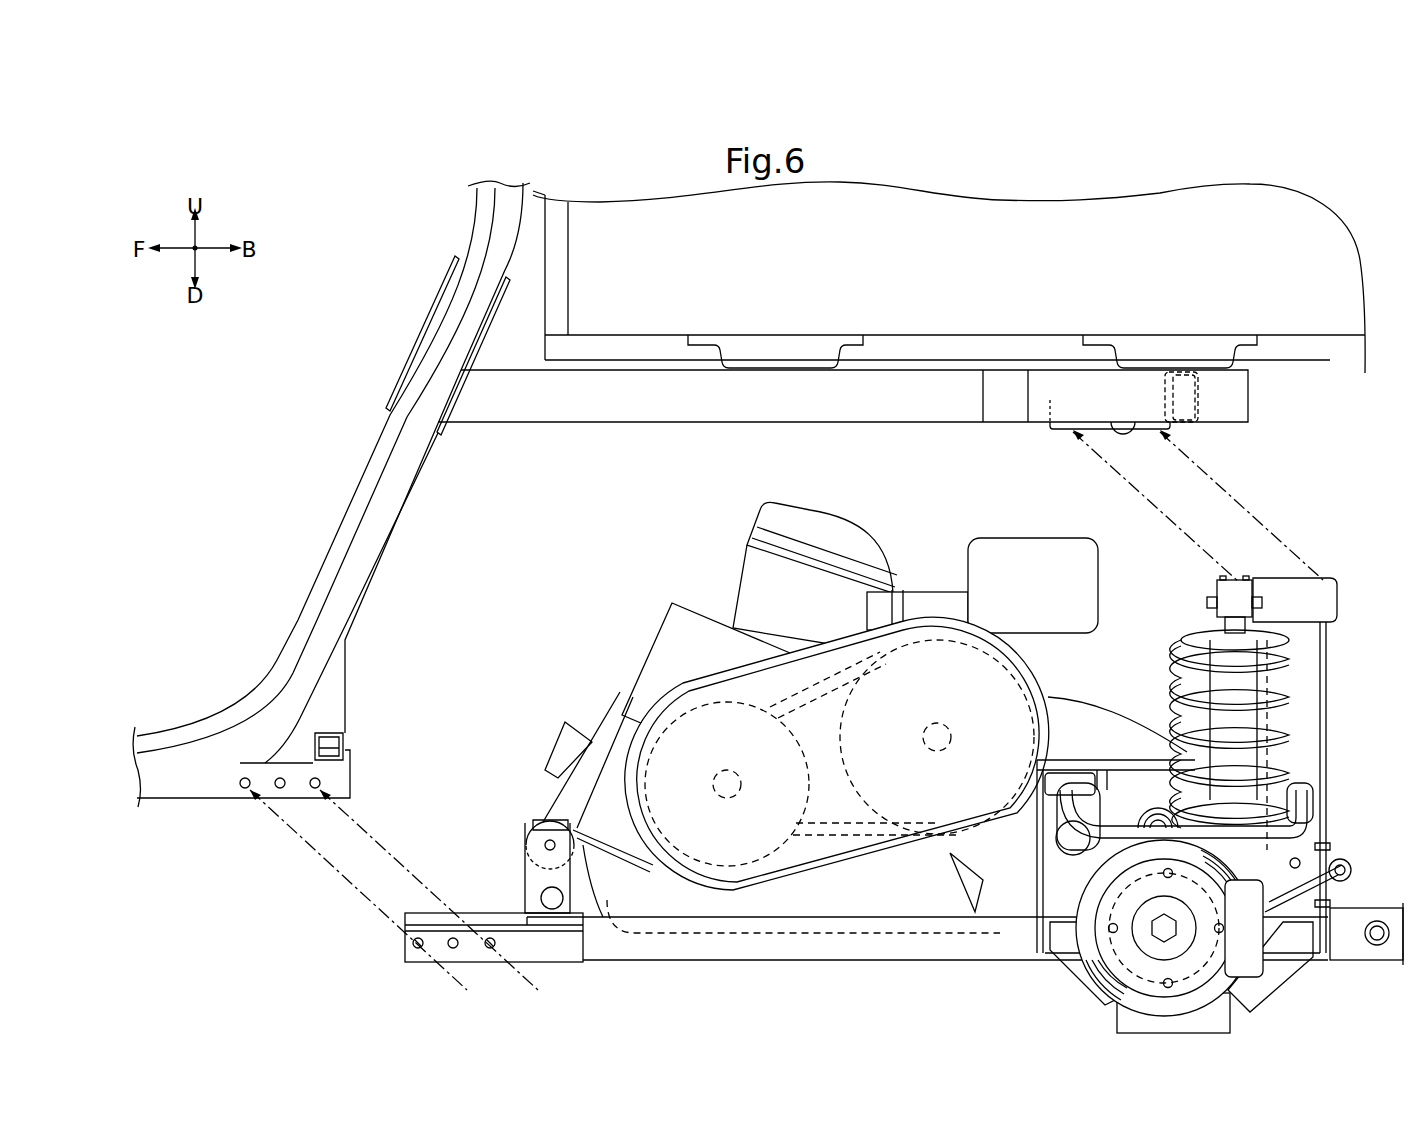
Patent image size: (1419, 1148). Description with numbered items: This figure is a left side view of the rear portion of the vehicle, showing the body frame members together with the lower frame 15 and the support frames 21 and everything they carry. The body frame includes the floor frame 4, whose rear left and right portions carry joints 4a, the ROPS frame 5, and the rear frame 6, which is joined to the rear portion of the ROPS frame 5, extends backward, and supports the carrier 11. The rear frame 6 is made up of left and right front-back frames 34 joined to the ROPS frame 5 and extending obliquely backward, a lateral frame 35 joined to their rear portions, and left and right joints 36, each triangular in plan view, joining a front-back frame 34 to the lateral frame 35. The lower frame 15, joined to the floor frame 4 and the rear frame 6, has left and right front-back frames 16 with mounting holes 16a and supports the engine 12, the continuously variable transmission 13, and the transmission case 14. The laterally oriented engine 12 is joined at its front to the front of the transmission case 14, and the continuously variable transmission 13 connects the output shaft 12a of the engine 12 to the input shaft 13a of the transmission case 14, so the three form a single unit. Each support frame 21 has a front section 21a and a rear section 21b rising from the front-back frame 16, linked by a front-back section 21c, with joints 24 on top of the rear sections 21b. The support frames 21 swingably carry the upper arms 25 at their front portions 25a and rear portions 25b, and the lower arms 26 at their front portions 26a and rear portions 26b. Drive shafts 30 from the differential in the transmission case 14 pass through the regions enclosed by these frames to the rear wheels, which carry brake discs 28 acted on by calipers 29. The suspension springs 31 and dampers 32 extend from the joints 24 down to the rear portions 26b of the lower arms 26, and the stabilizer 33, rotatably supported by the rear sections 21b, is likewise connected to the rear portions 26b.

The floor frame 4 is at (243, 720).
The joints 4a is at (265, 778).
The ROPS frame 5 is at (359, 480).
The rear frame 6 is at (843, 411).
The carrier 11 is at (1330, 362).
The engine 12 is at (665, 640).
The output shaft 12a is at (712, 782).
The continuously variable transmission 13 is at (795, 775).
The input shaft 13a is at (948, 730).
The transmission case 14 is at (1075, 718).
The lower frame 15 is at (866, 982).
The front-back frames 16 is at (606, 978).
The mounting holes 16a is at (474, 955).
The support frames 21 is at (1147, 768).
The front section 21a is at (1037, 873).
The rear section 21b is at (1328, 662).
The front-back section 21c is at (1150, 768).
The joints 24 is at (1287, 585).
The upper arms 25 is at (1172, 789).
The front portions 25a is at (1042, 780).
The rear portions 25b is at (1303, 780).
The lower arms 26 is at (1146, 980).
The front portions 26a is at (1073, 957).
The rear portions 26b is at (1280, 970).
The brake discs 28 is at (1083, 973).
The calipers 29 is at (1247, 955).
The drive shafts 30 is at (1120, 1033).
The suspension springs 31 is at (1190, 660).
The dampers 32 is at (1245, 706).
The stabilizer 33 is at (1342, 868).
The front-back frames 34 is at (610, 380).
The lateral frame 35 is at (1203, 392).
The joints 36 is at (1123, 437).